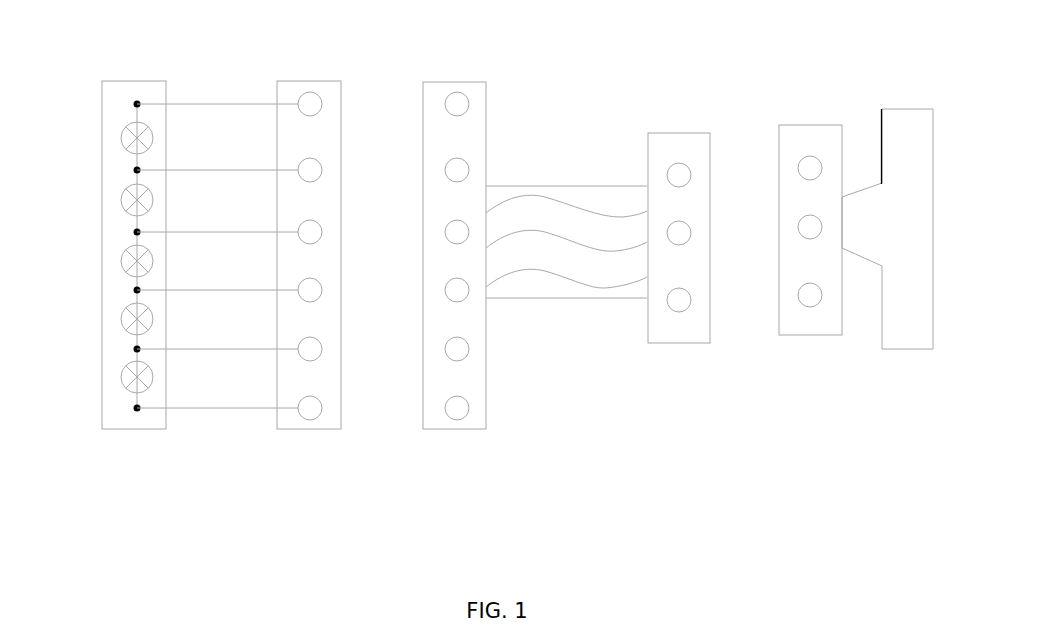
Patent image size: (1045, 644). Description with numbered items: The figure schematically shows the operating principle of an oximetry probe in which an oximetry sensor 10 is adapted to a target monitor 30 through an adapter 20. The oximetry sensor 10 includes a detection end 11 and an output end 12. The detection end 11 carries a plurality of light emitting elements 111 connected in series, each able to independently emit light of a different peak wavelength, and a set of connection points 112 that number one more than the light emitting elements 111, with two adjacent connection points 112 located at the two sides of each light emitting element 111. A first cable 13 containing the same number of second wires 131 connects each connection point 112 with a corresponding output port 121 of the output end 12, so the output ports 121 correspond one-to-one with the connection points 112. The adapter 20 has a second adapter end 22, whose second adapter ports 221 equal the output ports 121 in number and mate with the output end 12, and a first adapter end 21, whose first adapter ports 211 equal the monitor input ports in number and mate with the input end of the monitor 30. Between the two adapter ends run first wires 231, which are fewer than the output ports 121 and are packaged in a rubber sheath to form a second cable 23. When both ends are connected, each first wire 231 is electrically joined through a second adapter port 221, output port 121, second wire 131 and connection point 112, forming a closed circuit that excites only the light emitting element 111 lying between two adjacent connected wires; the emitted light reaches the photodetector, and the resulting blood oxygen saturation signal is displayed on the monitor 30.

The oximetry sensor 10 is at (136, 58).
The detection end 11 is at (136, 430).
The light emitting element 111 is at (121, 140).
The connection point 112 is at (134, 104).
The output end 12 is at (311, 431).
The output port 121 is at (313, 170).
The first cable 13 is at (199, 426).
The second wire 131 is at (196, 168).
The adapter 20 is at (463, 59).
The first adapter end 21 is at (681, 345).
The first adapter port 211 is at (674, 168).
The second adapter end 22 is at (445, 431).
The second adapter port 221 is at (446, 104).
The second cable 23 is at (532, 158).
The first wire 231 is at (562, 203).
The monitor 30 is at (807, 132).